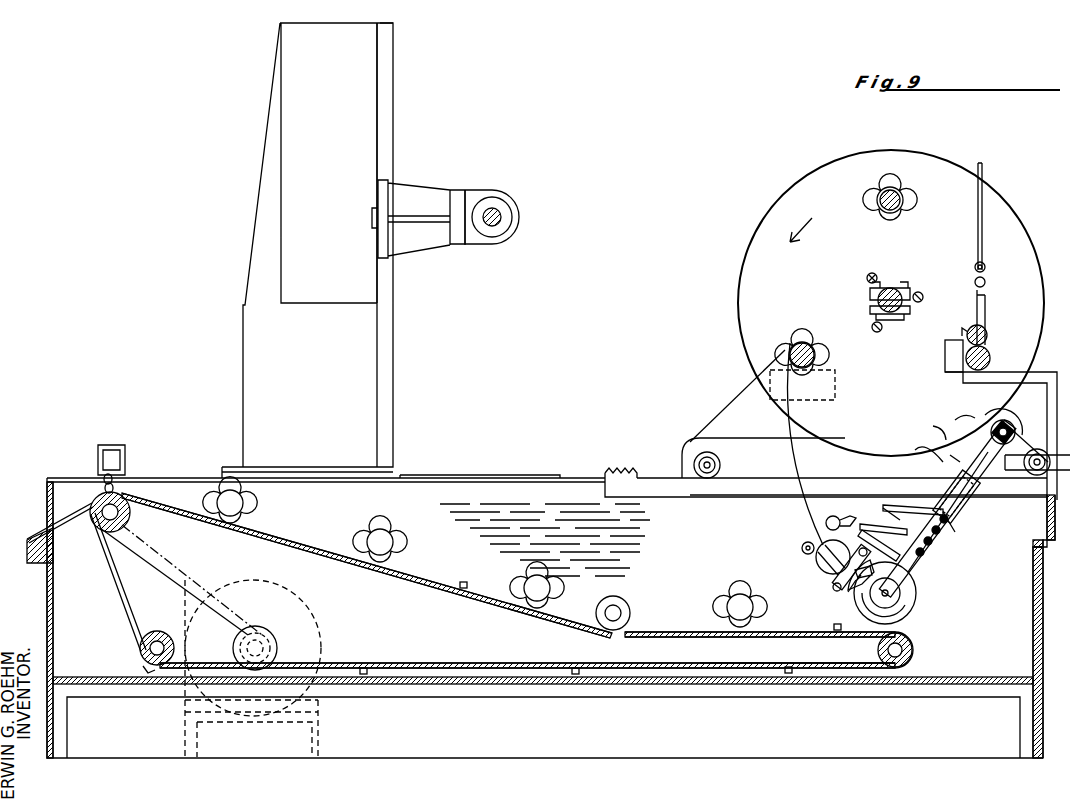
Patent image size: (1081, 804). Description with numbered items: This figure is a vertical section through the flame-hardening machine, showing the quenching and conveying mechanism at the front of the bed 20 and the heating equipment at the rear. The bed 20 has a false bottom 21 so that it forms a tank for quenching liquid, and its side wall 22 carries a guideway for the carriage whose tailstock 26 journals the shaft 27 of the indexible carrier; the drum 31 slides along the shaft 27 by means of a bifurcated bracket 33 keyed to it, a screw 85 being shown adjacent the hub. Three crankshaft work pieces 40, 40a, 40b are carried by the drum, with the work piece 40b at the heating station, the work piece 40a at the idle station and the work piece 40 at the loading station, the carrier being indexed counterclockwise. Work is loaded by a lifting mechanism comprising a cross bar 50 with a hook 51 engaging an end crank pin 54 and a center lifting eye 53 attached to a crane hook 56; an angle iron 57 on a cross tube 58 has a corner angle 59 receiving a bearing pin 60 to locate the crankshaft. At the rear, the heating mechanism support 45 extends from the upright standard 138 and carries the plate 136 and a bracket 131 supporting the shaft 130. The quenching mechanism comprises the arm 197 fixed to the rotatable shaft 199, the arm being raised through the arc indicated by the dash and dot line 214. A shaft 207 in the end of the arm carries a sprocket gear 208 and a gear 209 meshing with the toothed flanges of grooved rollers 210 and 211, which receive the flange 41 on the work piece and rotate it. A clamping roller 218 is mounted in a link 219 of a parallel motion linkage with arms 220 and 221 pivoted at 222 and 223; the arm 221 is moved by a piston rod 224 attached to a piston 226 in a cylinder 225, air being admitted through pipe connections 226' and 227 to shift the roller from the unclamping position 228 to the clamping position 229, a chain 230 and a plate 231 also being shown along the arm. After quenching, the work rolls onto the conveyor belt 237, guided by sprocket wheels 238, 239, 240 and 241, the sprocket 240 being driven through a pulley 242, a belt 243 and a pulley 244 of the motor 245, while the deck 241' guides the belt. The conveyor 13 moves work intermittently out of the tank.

The conveyor 13 is at (768, 470).
The rectangular bed 20 is at (40, 503).
The false bottom 21 is at (952, 676).
The side wall 22 is at (588, 480).
The tailstock 26 is at (712, 418).
The shaft 27 is at (896, 290).
The second drum 31 is at (832, 162).
The bifurcated bracket 33 is at (872, 284).
The work piece 40 is at (732, 595).
The work piece 40a is at (900, 200).
The work piece 40b is at (795, 343).
The flange 41 is at (830, 575).
The work heating mechanism support 45 is at (320, 30).
The cross bar 50 is at (975, 282).
The hook 51 is at (992, 300).
The lifting eye 53 is at (988, 268).
The end crank pin 54 is at (972, 326).
The hook 56 is at (984, 255).
The angle iron 57 is at (1052, 372).
The cross tube 58 is at (1038, 478).
The corner angle 59 is at (945, 358).
The bearing pin 60 is at (992, 355).
The screw 85 is at (920, 292).
The shaft 130 is at (500, 212).
The bracket 131 is at (430, 190).
The plate 136 is at (390, 106).
The upright standard 138 is at (243, 357).
The arm 197 is at (960, 490).
The rotatable shaft 199 is at (998, 412).
The shaft 207 is at (900, 600).
The sprocket gear 208 is at (912, 620).
The gear 209 is at (862, 598).
The grooved roller 210 is at (838, 378).
The grooved roller 211 is at (768, 360).
The dash and dot line 214 is at (790, 423).
The clamping roller 218 is at (815, 555).
The link 219 is at (885, 507).
The parallel arm 220 is at (866, 524).
The parallel arm 221 is at (930, 508).
The pivot 222 is at (905, 560).
The pivot 223 is at (950, 512).
The piston rod 224 is at (915, 452).
The cylinder 225 is at (996, 425).
The piston 226 is at (940, 441).
The pipe connection 226' is at (909, 423).
The pipe connection 227 is at (958, 420).
The dash and dot lines 228 is at (846, 336).
The clamping position 229 is at (802, 550).
The chain 230 is at (950, 540).
The plate 231 is at (986, 476).
The conveyor belt 237 is at (778, 658).
The sprocket wheel 238 is at (878, 650).
The sprocket wheel 239 is at (622, 602).
The sprocket wheel 240 is at (132, 514).
The sprocket wheel 241 is at (153, 635).
The deck 241' is at (60, 494).
The pulley 242 is at (138, 490).
The belt 243 is at (200, 562).
The pulley 244 is at (290, 590).
The motor 245 is at (318, 606).